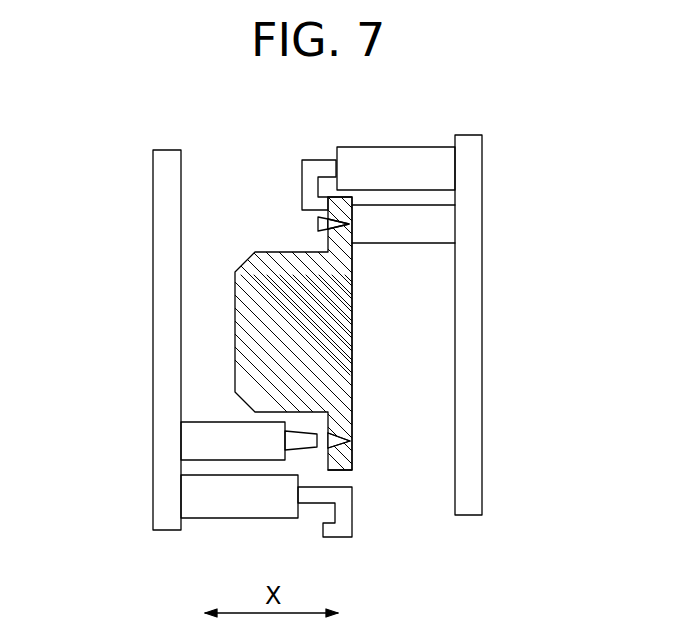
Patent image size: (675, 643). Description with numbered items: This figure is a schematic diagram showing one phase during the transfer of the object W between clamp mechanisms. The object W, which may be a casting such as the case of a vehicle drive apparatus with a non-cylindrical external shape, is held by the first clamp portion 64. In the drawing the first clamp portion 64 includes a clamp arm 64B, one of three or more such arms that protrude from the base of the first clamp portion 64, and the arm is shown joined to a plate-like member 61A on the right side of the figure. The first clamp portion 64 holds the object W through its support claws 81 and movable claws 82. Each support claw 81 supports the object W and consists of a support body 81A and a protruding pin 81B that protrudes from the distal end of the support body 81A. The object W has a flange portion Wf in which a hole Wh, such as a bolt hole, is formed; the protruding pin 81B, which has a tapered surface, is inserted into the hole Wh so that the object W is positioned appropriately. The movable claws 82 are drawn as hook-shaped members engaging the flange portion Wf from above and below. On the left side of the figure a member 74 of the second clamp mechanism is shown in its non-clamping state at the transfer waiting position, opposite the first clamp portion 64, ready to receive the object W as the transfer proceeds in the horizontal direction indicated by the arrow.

The support member (7) 74 is at (137, 212).
The first clamp portion 64 is at (485, 306).
The clamp arm 64B is at (385, 155).
The base plate 61A is at (481, 349).
The support claw 81 is at (317, 361).
The support body 81A is at (437, 243).
The protruding pin 81B is at (318, 226).
The movable claw 82 is at (301, 185).
The object W is at (354, 348).
The hole Wh is at (348, 223).
The flange portion Wf is at (327, 196).